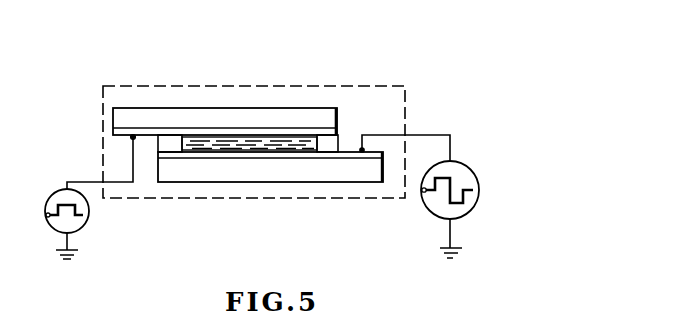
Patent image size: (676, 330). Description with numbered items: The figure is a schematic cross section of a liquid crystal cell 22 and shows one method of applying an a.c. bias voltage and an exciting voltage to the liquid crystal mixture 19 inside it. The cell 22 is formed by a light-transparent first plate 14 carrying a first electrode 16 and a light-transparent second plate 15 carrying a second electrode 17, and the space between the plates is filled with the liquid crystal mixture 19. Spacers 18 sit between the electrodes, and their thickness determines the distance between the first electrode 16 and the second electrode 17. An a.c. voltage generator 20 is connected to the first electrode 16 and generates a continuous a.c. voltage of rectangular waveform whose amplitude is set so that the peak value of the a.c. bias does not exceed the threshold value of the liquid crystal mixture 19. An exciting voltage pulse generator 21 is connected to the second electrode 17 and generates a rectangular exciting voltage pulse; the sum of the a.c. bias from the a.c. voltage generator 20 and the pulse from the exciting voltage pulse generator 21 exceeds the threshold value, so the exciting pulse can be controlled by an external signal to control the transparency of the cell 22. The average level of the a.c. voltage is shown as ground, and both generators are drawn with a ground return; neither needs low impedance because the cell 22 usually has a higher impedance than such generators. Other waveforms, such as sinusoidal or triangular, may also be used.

The first plate 14 is at (387, 153).
The second plate 15 is at (230, 100).
The first electrode 16 is at (200, 153).
The second electrode 17 is at (113, 135).
The spacers 18 is at (170, 139).
The liquid crystal mixture 19 is at (252, 143).
The a.c. voltage generator 20 is at (466, 163).
The exciting voltage pulse generator 21 is at (84, 226).
The cell 22 is at (409, 97).